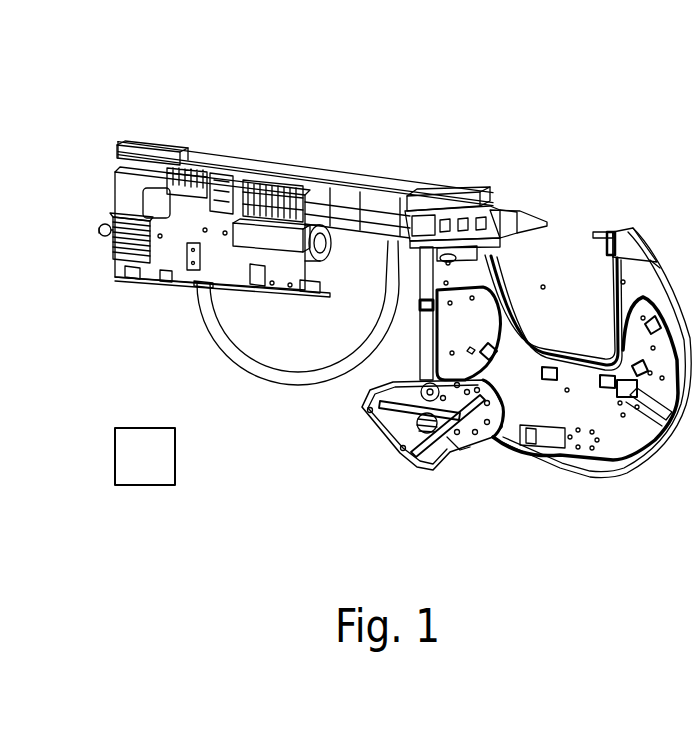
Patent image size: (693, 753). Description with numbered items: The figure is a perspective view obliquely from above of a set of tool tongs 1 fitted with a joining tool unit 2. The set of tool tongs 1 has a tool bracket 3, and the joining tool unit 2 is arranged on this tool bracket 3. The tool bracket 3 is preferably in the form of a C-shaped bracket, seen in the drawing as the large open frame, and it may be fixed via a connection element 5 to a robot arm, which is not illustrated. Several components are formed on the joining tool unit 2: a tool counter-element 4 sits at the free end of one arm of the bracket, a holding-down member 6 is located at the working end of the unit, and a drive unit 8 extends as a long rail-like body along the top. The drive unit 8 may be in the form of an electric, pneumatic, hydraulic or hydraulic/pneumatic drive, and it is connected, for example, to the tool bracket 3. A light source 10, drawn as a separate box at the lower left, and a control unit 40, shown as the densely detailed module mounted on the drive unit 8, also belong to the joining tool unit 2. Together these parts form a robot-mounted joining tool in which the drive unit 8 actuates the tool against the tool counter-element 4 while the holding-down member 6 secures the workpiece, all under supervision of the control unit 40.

The set of tool tongs 1 is at (460, 129).
The joining tool unit 2 is at (514, 199).
The tool bracket 3 is at (615, 440).
The tool counter-element 4 is at (598, 233).
The connection element 5 is at (433, 474).
The holding-down member 6 is at (528, 238).
The drive unit 8 is at (357, 184).
The light source 10 is at (154, 471).
The control unit 40 is at (120, 272).